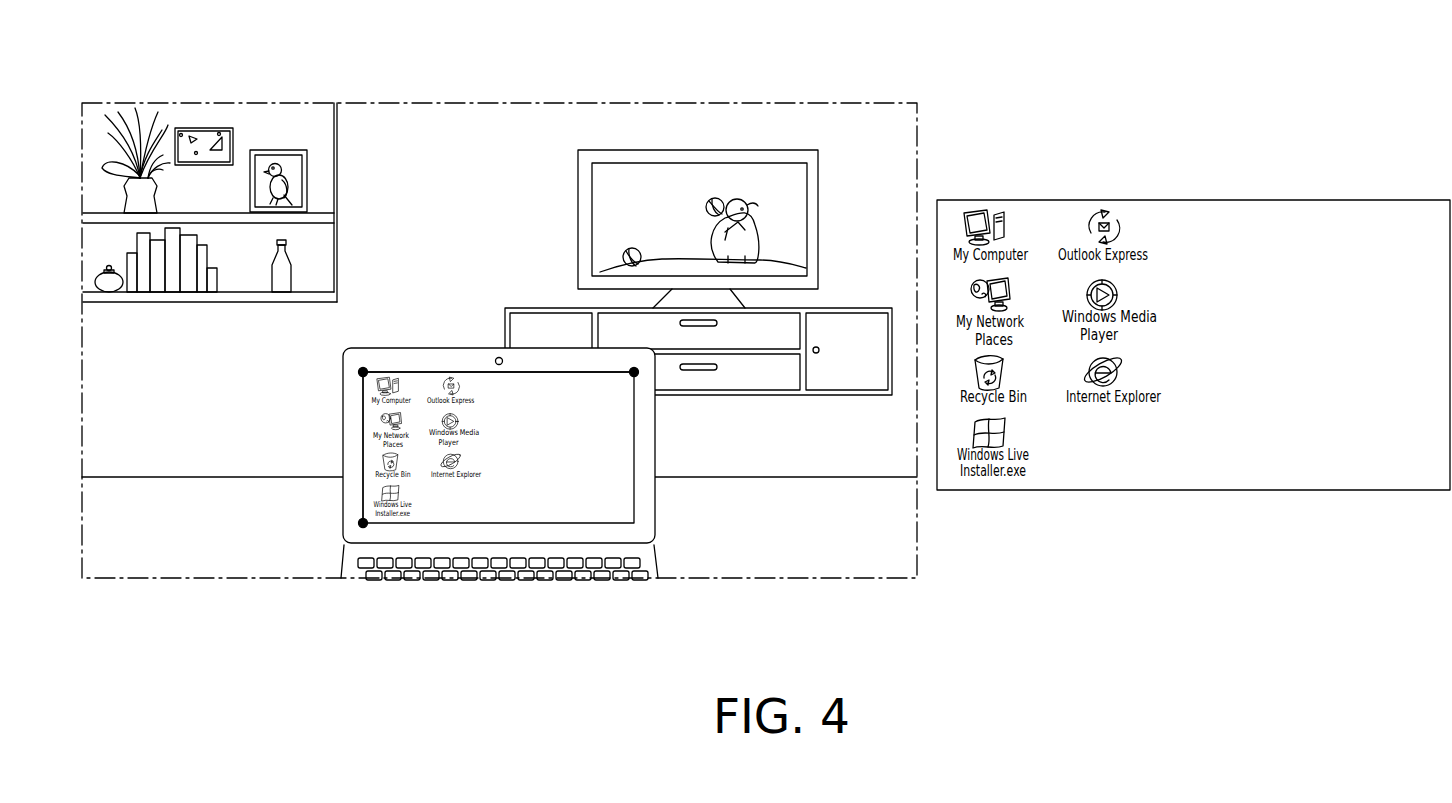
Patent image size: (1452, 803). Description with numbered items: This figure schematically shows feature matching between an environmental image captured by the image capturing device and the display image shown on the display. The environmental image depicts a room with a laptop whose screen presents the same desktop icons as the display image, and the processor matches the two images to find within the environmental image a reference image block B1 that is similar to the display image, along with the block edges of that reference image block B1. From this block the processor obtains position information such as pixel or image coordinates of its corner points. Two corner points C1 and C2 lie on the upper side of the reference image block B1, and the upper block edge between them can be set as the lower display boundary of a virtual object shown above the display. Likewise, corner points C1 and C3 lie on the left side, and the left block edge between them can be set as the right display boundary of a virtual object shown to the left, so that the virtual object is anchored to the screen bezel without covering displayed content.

The corner point C1 is at (363, 372).
The corner point C2 is at (634, 372).
The corner point C3 is at (363, 523).
The reference image block B1 is at (610, 498).